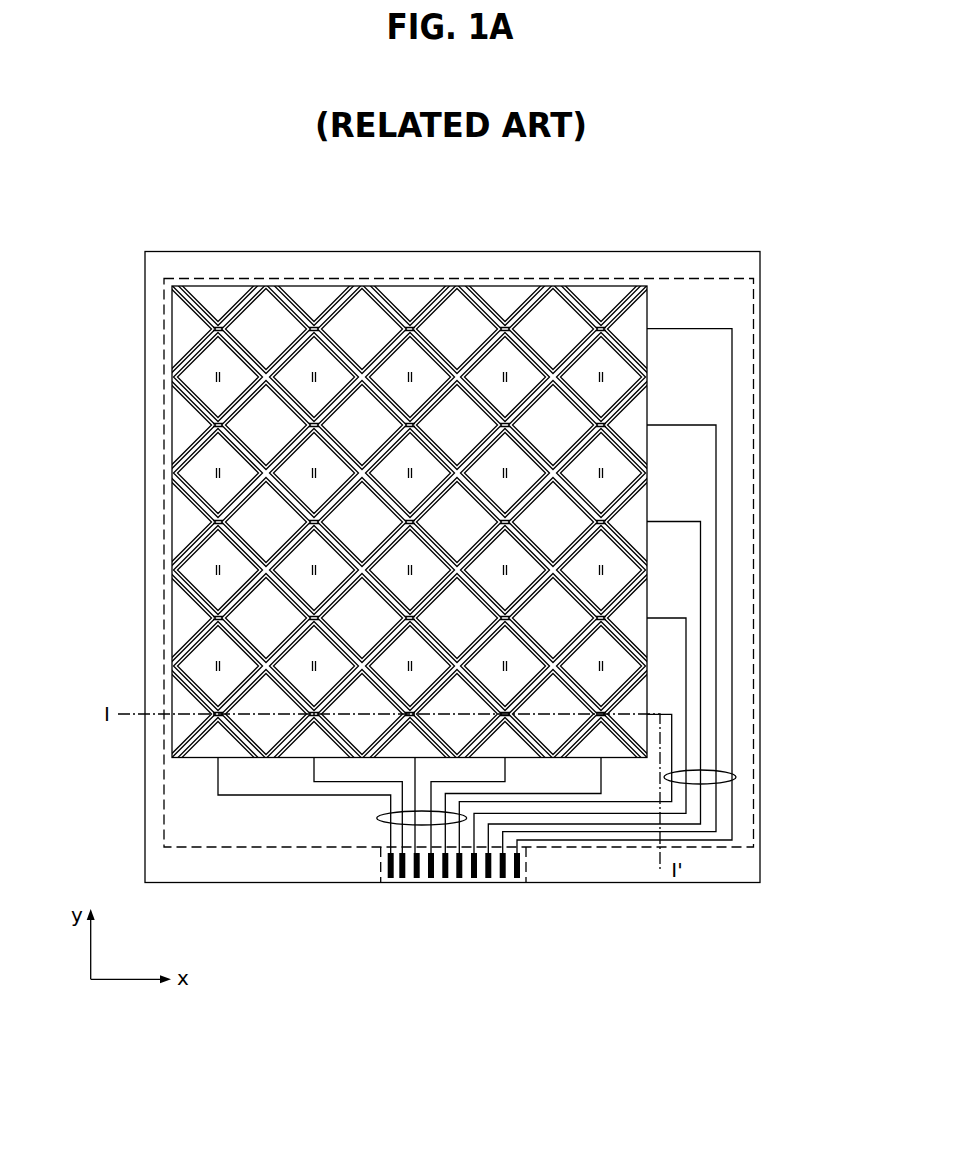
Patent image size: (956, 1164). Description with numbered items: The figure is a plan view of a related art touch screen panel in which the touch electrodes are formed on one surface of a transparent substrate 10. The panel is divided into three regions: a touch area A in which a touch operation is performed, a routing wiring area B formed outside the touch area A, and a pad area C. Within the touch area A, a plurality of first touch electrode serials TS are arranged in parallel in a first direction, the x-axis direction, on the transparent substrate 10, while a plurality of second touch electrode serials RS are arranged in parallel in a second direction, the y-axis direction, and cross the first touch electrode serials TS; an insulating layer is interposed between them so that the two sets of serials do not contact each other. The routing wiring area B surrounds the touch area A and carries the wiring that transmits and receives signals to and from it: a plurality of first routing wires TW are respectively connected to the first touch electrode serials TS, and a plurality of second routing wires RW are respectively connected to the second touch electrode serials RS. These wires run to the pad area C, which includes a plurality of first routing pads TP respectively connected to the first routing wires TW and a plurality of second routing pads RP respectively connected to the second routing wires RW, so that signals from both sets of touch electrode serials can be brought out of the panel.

The transparent substrate 10 is at (753, 868).
The touch area A is at (562, 266).
The routing wiring area B is at (708, 266).
The second touch electrode serials RS is at (218, 293).
The first touch electrode serials TS is at (177, 325).
The second routing wires RW is at (377, 818).
The first routing wires TW is at (736, 777).
The second routing pads RP is at (387, 890).
The first routing pads TP is at (471, 890).
The pad area C is at (535, 863).